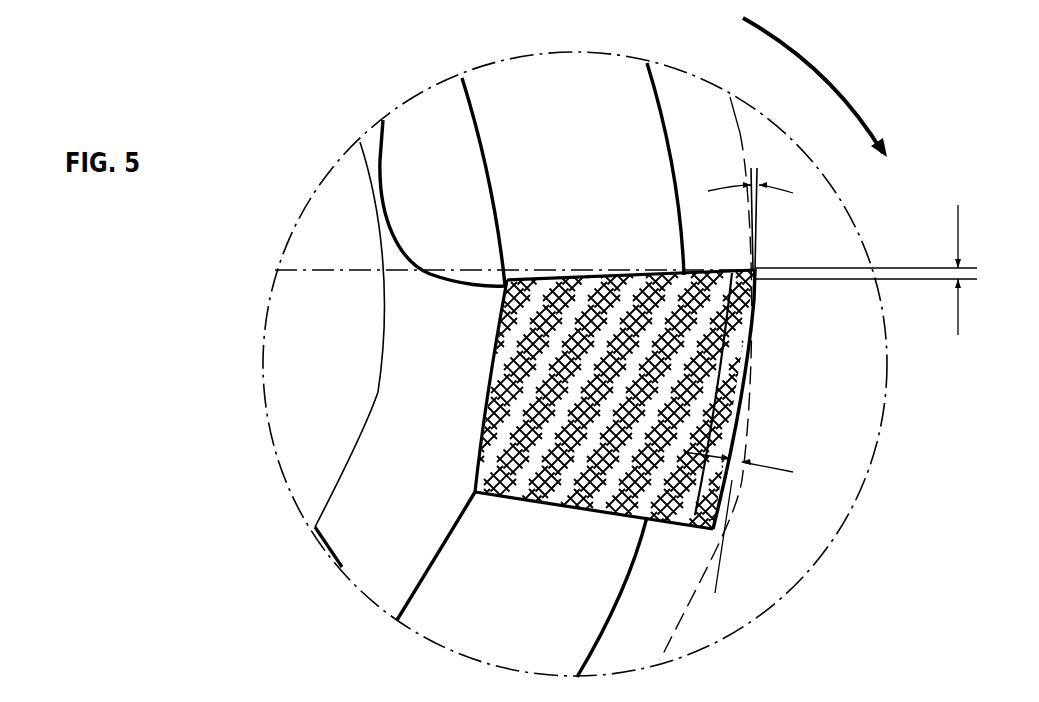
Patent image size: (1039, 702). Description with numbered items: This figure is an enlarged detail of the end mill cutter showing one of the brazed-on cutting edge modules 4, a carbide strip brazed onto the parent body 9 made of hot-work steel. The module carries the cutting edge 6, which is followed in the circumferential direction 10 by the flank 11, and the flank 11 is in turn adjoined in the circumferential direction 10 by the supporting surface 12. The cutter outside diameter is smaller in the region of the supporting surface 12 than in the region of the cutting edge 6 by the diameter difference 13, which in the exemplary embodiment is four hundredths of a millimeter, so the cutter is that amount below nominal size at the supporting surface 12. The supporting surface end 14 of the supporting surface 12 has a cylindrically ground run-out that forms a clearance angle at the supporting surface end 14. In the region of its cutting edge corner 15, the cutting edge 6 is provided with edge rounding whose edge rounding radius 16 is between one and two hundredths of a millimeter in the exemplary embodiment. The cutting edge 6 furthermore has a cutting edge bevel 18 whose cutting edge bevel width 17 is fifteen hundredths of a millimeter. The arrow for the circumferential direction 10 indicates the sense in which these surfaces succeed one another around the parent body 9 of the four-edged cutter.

The cutting edge module 4 is at (600, 512).
The cutting edge 6 is at (628, 272).
The parent body 9 is at (300, 393).
The circumferential direction 10 is at (835, 80).
The flank 11 is at (745, 352).
The supporting surface 12 is at (732, 482).
The diameter difference 13 is at (757, 457).
The supporting surface end 14 is at (733, 527).
The cutting edge corner 15 is at (757, 268).
The edge rounding radius 16 is at (770, 188).
The cutting edge bevel width 17 is at (968, 272).
The cutting edge bevel 18 is at (757, 276).